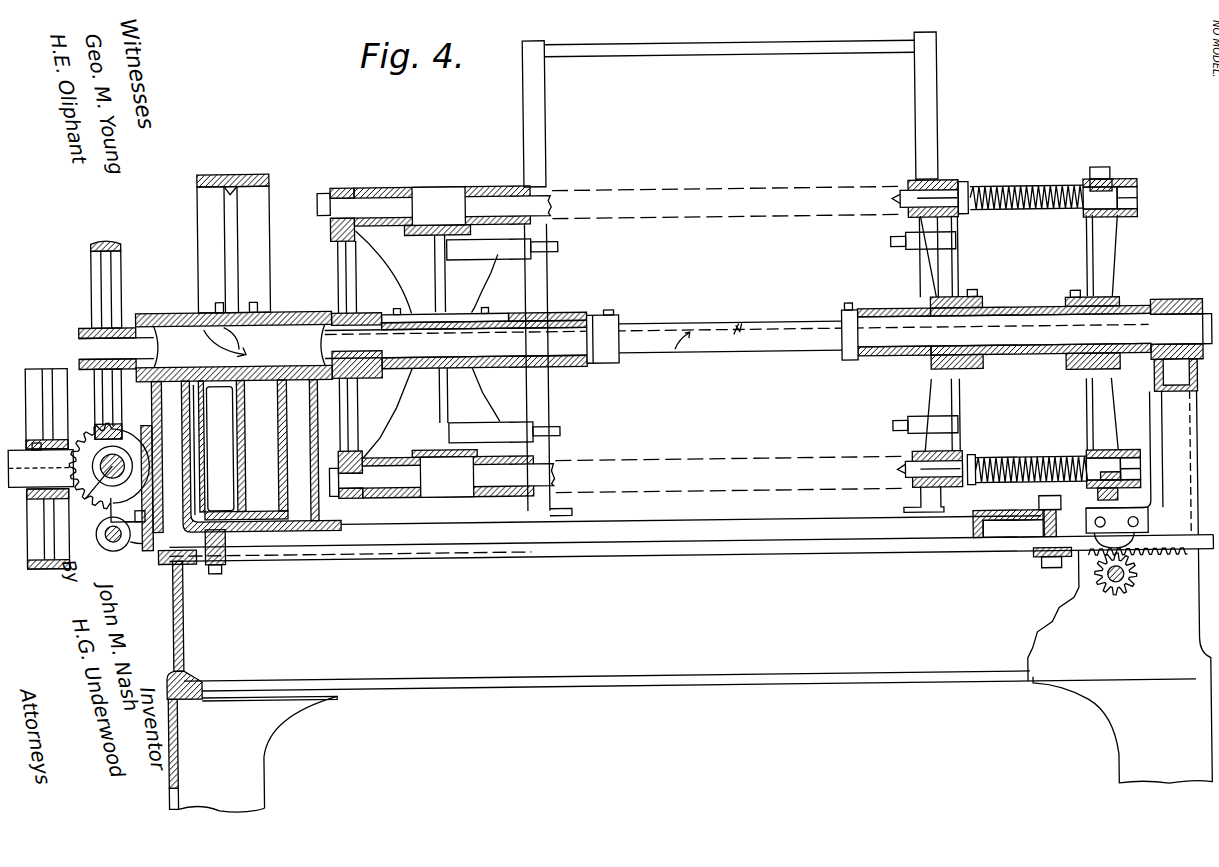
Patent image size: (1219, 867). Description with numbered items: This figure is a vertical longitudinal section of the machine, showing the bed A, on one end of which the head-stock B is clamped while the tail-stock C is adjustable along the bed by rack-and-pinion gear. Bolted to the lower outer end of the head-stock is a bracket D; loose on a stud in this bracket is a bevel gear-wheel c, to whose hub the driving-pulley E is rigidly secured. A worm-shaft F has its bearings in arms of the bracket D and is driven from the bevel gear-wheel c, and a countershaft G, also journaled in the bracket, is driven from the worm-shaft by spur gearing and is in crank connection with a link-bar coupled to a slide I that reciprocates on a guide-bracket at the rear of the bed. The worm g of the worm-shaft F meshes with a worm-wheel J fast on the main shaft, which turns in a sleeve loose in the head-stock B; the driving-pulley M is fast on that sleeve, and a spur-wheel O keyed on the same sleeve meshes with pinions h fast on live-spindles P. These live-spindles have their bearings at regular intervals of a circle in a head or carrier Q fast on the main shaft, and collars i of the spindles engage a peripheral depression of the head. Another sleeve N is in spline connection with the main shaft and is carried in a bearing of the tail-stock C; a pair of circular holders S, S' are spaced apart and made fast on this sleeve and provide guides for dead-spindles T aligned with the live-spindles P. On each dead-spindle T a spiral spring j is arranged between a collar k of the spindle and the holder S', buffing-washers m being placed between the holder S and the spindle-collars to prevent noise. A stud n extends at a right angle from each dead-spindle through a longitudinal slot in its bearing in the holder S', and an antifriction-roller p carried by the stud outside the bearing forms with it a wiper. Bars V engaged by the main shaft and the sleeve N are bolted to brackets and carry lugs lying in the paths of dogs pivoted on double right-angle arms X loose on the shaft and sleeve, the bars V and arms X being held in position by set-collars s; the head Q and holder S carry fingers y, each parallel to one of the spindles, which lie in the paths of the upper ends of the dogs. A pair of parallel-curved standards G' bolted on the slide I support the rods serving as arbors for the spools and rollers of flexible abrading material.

The bed A is at (170, 583).
The head-stock B is at (170, 302).
The tail-stock C is at (1118, 572).
The bevel gear-wheel c is at (74, 440).
The bracket D is at (128, 508).
The driving-pulley E is at (34, 535).
The worm-shaft F is at (92, 490).
The countershaft G is at (343, 489).
The standards G' is at (732, 274).
The worm g is at (160, 487).
The pinions h is at (346, 190).
The slide I is at (710, 521).
The collars i is at (443, 342).
The worm-wheel J is at (120, 402).
The spiral spring j is at (1032, 192).
The collar k is at (973, 192).
The driving-pulley M is at (203, 249).
The buffing-washers m is at (963, 185).
The sleeve N is at (1018, 314).
The stud n is at (1122, 186).
The spur-wheel O is at (332, 296).
The live-spindles P is at (487, 198).
The antifriction-roller p is at (1100, 173).
The head or carrier Q is at (475, 291).
The circular holder S is at (942, 363).
The circular holder S' is at (1116, 332).
The set-collars s is at (616, 313).
The dead-spindles T is at (940, 192).
The bars V is at (600, 315).
The double right-angle arm X is at (555, 318).
The fingers y is at (562, 247).